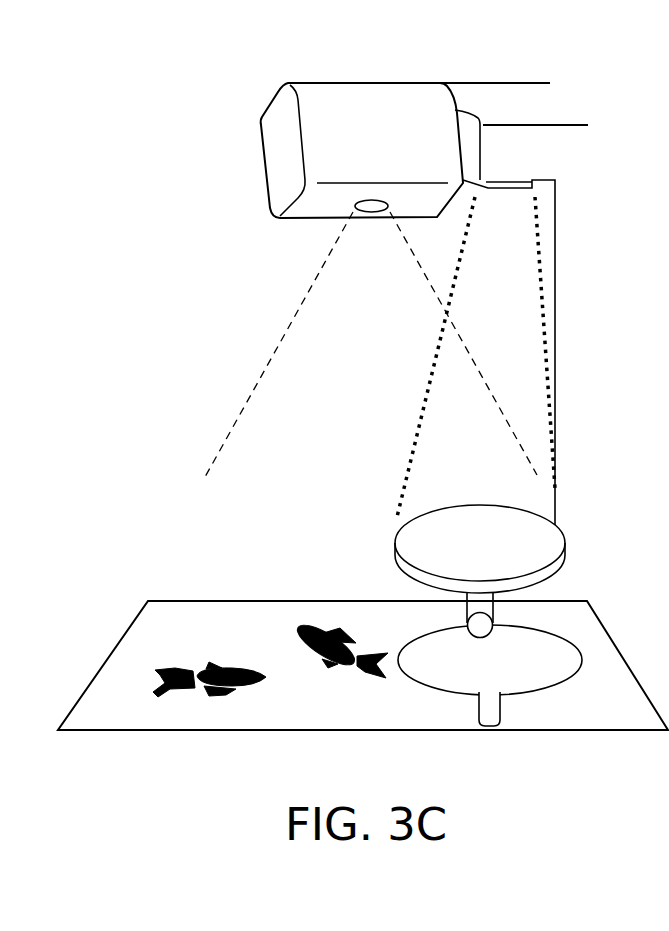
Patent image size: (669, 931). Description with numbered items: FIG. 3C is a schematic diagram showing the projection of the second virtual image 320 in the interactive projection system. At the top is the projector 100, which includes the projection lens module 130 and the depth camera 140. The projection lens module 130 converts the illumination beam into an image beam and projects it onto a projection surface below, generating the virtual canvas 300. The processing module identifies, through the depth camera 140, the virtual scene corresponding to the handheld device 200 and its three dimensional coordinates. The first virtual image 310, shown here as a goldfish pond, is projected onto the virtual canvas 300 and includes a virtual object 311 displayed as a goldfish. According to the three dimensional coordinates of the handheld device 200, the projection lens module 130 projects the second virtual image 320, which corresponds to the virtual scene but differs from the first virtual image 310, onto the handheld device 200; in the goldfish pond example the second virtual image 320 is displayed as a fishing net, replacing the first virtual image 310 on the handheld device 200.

The projector 100 is at (500, 83).
The projection lens module 130 is at (345, 92).
The depth camera 140 is at (517, 182).
The handheld device 200 is at (448, 547).
The second virtual image 320 is at (477, 512).
The virtual canvas 300 is at (587, 732).
The first virtual image 310 is at (250, 607).
The virtual object 311 is at (209, 665).